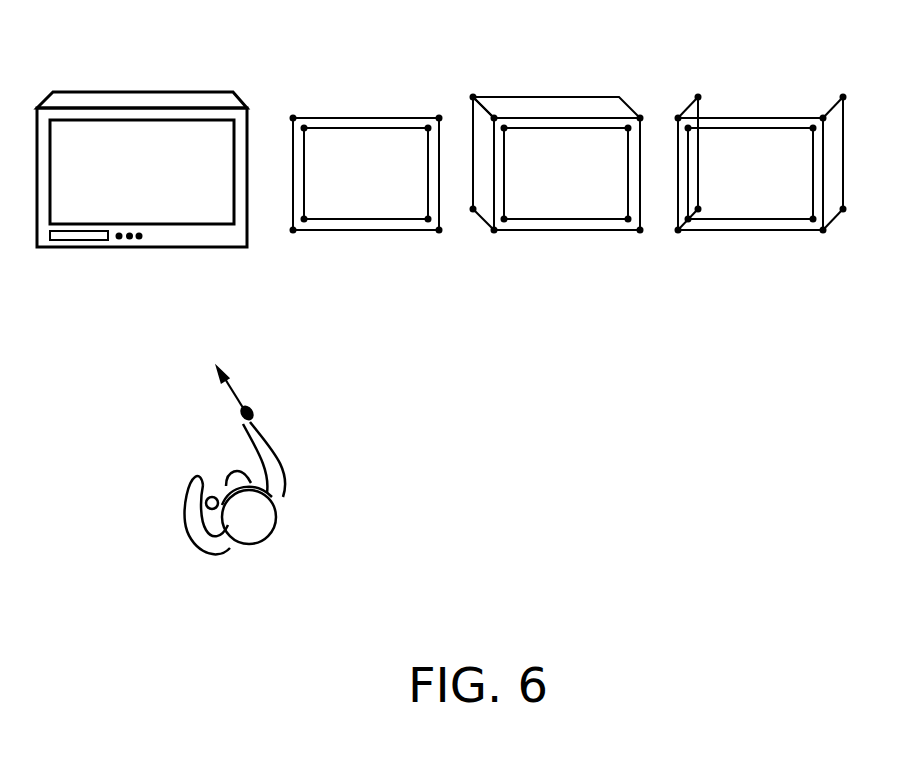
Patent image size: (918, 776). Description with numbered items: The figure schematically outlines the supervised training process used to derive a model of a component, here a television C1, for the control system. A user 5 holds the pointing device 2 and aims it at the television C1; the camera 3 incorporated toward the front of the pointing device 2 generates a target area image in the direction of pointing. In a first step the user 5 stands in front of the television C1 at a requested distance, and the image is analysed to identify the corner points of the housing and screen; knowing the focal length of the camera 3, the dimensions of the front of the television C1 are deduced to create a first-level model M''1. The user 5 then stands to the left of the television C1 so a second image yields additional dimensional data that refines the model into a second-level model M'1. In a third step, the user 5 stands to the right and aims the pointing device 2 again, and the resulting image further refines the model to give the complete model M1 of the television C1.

The television C1 is at (173, 102).
The first-level model M''1 is at (366, 141).
The second-level model M'1 is at (557, 132).
The complete model M1 is at (746, 123).
The user 5 is at (277, 480).
The pointing device 2 is at (253, 412).
The camera 3 is at (243, 405).